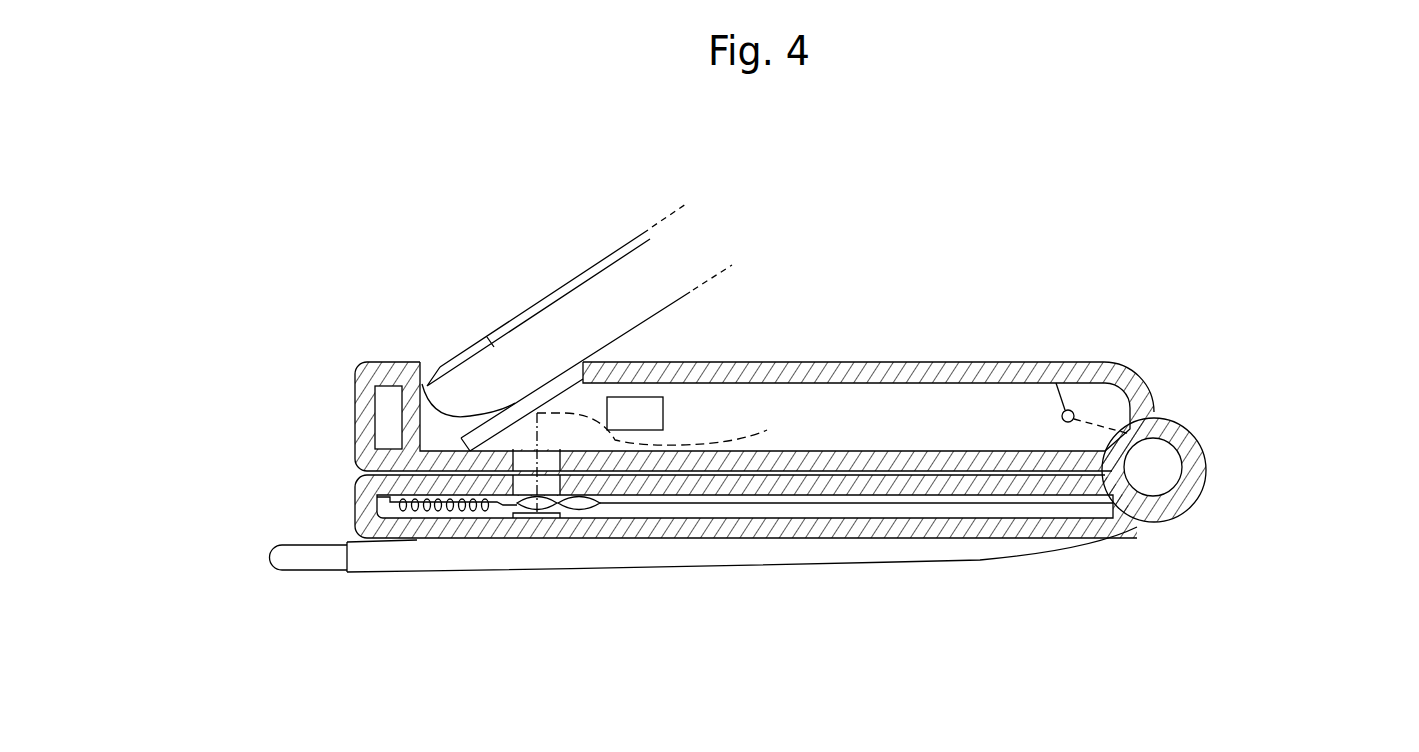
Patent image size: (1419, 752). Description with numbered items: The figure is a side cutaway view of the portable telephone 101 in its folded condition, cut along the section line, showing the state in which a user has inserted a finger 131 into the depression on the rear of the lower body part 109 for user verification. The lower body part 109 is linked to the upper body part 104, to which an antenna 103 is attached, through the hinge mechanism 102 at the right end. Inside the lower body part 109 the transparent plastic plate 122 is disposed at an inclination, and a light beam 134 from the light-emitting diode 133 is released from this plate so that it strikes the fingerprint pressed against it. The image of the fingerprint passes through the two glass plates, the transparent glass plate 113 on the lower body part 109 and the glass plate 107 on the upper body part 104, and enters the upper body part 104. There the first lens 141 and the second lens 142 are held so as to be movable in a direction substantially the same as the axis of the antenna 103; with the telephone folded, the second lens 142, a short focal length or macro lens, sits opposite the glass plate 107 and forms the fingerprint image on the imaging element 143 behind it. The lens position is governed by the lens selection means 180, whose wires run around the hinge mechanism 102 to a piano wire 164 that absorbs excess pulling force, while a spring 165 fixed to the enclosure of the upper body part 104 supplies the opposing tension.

The portable telephone 101 is at (400, 248).
The hinge mechanism 102 is at (1165, 448).
The antenna 103 is at (302, 545).
The upper body part 104 is at (1138, 535).
The glass plate 107 is at (527, 488).
The lower body part 109 is at (1068, 362).
The transparent glass plate 113 is at (527, 455).
The transparent plastic plate 122 is at (641, 381).
The finger 131 is at (556, 289).
The light-emitting diode 133 is at (664, 410).
The light beam 134 is at (677, 429).
The first lens 141 is at (600, 507).
The second lens 142 is at (531, 511).
The imaging element 143 is at (566, 521).
The piano wire 164 is at (1061, 414).
The spring 165 is at (427, 516).
The lens selection means 180 is at (478, 518).